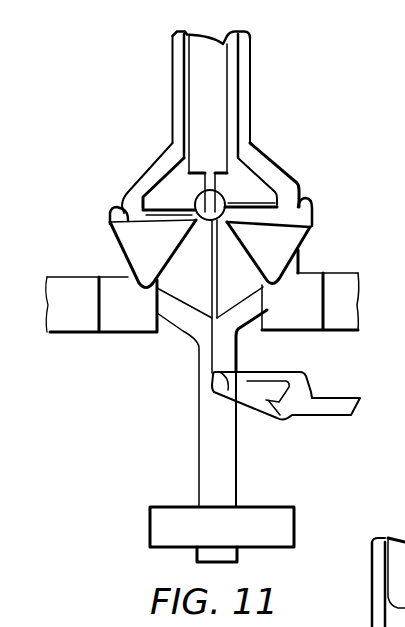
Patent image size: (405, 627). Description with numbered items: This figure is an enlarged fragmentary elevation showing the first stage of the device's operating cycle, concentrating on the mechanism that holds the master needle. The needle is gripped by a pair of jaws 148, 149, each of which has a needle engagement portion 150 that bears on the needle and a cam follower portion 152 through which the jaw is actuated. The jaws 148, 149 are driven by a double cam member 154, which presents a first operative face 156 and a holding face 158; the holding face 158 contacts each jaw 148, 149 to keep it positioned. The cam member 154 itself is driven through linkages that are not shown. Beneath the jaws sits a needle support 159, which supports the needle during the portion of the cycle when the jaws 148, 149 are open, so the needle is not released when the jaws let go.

The jaw 148 is at (290, 240).
The jaw 149 is at (122, 238).
The needle engagement portion 150 is at (183, 209).
The cam follower portion 152 is at (110, 211).
The double cam member 154 is at (245, 136).
The first operative face 156 is at (147, 177).
The holding face 158 is at (300, 253).
The needle support 159 is at (243, 373).